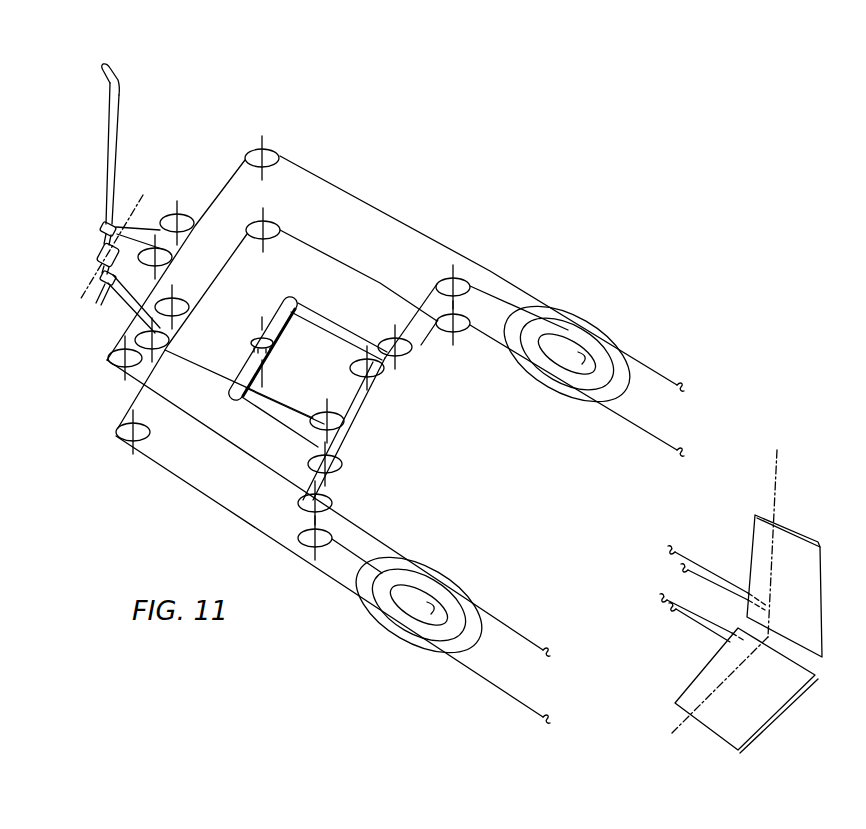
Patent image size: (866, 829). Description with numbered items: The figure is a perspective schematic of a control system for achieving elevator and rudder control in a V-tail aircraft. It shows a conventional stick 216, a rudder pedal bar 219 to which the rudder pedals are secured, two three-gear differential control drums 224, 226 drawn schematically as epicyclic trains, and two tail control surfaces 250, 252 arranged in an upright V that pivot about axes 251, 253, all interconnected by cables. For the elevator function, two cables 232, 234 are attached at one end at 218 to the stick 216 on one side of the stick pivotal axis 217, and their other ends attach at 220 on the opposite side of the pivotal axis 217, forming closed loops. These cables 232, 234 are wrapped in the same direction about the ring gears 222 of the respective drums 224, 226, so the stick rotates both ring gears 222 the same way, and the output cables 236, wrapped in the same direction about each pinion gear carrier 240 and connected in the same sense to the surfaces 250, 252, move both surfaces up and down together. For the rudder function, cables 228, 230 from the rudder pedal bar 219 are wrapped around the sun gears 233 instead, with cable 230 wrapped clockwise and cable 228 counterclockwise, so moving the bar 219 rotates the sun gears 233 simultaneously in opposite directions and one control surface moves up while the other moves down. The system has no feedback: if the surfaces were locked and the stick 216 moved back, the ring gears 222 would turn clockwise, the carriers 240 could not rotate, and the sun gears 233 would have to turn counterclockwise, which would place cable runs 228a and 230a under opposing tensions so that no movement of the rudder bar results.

The stick 216 is at (117, 128).
The stick pivotal axis 217 is at (99, 262).
The cable attachment point 218 is at (103, 233).
The rudder pedal bar 219 is at (275, 320).
The cable attachment point 220 is at (103, 290).
The ring gear 222 is at (577, 327).
The differential control drum 224 is at (529, 384).
The differential control drum 226 is at (352, 628).
The rudder cable 228 is at (320, 316).
The rudder cable 228a is at (337, 485).
The rudder cable 230 is at (341, 338).
The rudder cable 230a is at (422, 344).
The elevator cable 232 is at (328, 176).
The sun gear 233 is at (593, 361).
The elevator cable 234 is at (226, 442).
The output cable 236 is at (664, 374).
The pinion gear carrier 240 is at (587, 327).
The tail control surface 250 is at (784, 586).
The pivot axis 251 is at (779, 466).
The tail control surface 252 is at (746, 690).
The pivot axis 253 is at (690, 720).